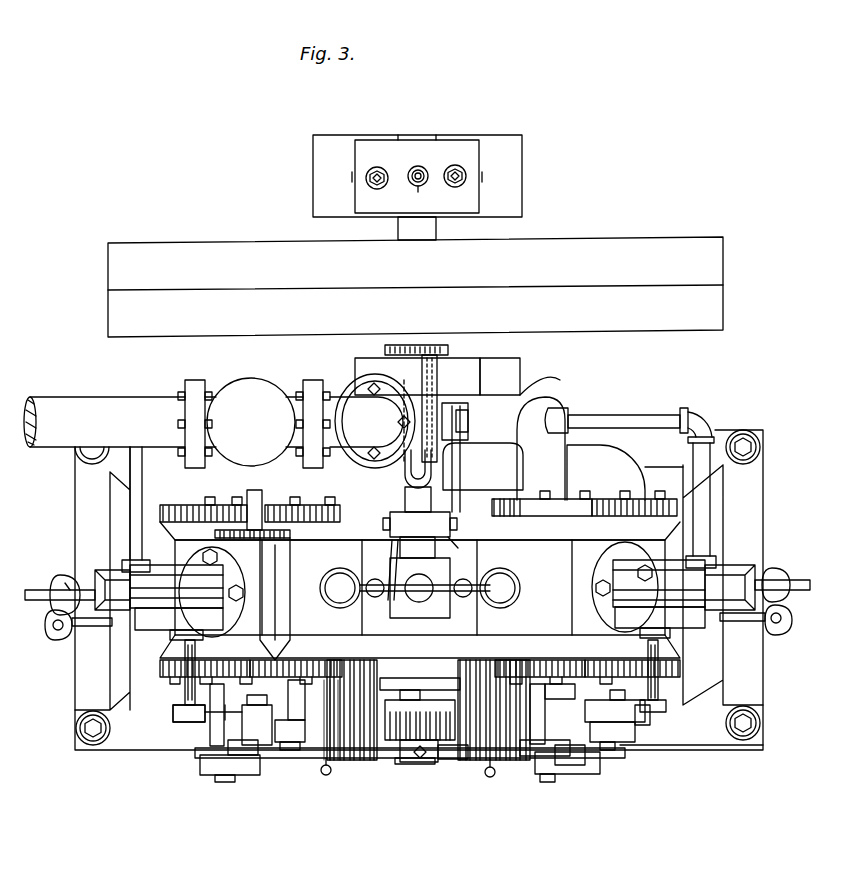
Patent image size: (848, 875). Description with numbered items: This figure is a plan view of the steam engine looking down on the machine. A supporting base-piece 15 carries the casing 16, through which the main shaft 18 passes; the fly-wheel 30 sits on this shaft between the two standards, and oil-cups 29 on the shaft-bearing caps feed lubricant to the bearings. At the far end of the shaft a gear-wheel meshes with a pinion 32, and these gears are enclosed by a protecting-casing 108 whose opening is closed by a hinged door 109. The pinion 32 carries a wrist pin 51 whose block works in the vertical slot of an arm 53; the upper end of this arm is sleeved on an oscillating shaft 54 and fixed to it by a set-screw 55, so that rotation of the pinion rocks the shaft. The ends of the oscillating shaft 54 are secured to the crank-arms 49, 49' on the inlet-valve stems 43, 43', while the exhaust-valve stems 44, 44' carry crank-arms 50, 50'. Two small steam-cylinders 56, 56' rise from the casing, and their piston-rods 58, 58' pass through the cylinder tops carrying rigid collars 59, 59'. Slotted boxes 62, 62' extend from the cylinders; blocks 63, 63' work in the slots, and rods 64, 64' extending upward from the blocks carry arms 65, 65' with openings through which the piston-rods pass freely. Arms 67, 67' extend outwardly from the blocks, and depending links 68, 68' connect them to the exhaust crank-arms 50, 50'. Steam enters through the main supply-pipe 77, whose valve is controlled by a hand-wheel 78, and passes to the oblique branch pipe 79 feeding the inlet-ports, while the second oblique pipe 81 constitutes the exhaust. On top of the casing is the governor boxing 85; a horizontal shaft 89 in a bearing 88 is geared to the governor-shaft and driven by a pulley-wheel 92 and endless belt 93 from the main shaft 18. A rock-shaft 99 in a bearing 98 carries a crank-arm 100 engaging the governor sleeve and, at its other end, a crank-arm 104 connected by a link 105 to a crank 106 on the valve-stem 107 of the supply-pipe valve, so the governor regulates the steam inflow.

The supporting base-piece 15 is at (684, 745).
The casing 16 is at (728, 526).
The shaft 18 is at (417, 228).
The oil-cups 29 is at (424, 172).
The fly-wheel 30 is at (658, 243).
The pinion 32 is at (400, 750).
The valve-stem 43 is at (230, 786).
The valve-stem 43' is at (569, 784).
The valve-stem 44 is at (265, 761).
The valve-stem 44' is at (628, 753).
The crank-arm 49 is at (239, 792).
The crank-arm 49' is at (601, 795).
The crank-arm 50 is at (284, 788).
The crank-arm 50' is at (615, 760).
The crank or wrist pin 51 is at (445, 762).
The arm 53 is at (410, 765).
The oscillating shaft 54 is at (315, 760).
The set-screw 55 is at (420, 768).
The steam-cylinder 56 is at (187, 592).
The steam-cylinder 56' is at (648, 587).
The piston-rod 58 is at (59, 582).
The piston-rod 58' is at (784, 572).
The rigid collar 59 is at (86, 573).
The rigid collar 59' is at (760, 570).
The slotted box 62 is at (179, 624).
The slotted box 62' is at (660, 622).
The block 63 is at (68, 643).
The block 63' is at (754, 634).
The rod 64 is at (44, 626).
The rod 64' is at (793, 620).
The arm 65 is at (47, 597).
The arm 65' is at (792, 589).
The arm 67 is at (116, 681).
The arm 67' is at (725, 676).
The link 68 is at (160, 751).
The link 68' is at (705, 744).
The main supply-pipe 77 is at (80, 403).
The hand-wheel 78 is at (247, 540).
The branch pipe 79 is at (560, 404).
The exhaust pipe 81 is at (625, 472).
The boxing 85 is at (420, 606).
The bearing 88 is at (405, 482).
The horizontal shaft 89 is at (424, 374).
The pulley-wheel 92 is at (436, 345).
The endless belt 93 is at (400, 345).
The bearing 98 is at (420, 577).
The rock-shaft 99 is at (457, 528).
The crank-arm 100 is at (390, 548).
The crank-arm 104 is at (460, 549).
The link 105 is at (460, 472).
The crank 106 is at (462, 431).
The valve-stem 107 is at (468, 416).
The protecting-casing 108 is at (530, 760).
The hinged door 109 is at (450, 760).